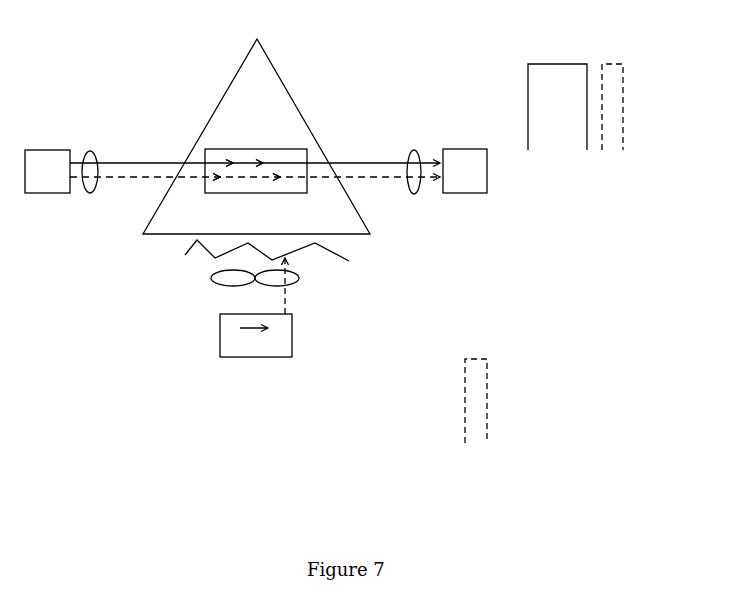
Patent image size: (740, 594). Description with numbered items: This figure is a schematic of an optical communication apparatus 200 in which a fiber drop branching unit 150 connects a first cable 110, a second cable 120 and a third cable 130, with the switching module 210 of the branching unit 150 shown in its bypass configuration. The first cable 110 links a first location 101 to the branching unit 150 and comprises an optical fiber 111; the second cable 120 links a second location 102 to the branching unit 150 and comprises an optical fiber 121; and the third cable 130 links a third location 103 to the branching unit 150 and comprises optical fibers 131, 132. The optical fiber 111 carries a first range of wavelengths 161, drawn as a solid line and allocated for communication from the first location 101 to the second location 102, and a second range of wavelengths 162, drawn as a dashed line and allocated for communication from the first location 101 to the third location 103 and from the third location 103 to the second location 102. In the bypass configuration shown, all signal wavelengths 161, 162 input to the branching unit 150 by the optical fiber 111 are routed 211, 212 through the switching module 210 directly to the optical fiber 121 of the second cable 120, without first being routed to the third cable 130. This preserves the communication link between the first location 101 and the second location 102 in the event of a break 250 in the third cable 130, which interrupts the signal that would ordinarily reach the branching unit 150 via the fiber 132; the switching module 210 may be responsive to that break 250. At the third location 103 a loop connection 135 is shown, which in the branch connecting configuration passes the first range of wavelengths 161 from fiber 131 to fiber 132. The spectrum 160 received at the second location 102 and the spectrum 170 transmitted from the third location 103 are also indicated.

The optical communication apparatus 200 is at (402, 59).
The first location 101 is at (40, 193).
The optical fiber 111 is at (88, 151).
The first cable 110 is at (123, 148).
The second cable 120 is at (337, 134).
The branching unit 150 is at (236, 82).
The switching module 210 is at (214, 150).
The routing of first range of wavelengths 211 is at (249, 162).
The routing of second range of wavelengths 212 is at (250, 189).
The optical fiber 121 is at (417, 194).
The second location 102 is at (487, 180).
The break 250 is at (355, 245).
The optical fiber 131 is at (213, 278).
The third cable 130 is at (218, 303).
The optical fiber 132 is at (300, 282).
The third location 103 is at (280, 357).
The loop connection 135 is at (240, 330).
The first range of wavelengths 161 is at (543, 62).
The second range of wavelengths 162 is at (616, 62).
The spectrum received at the second location 160 is at (623, 176).
The spectrum transmitted from the third location 170 is at (479, 462).